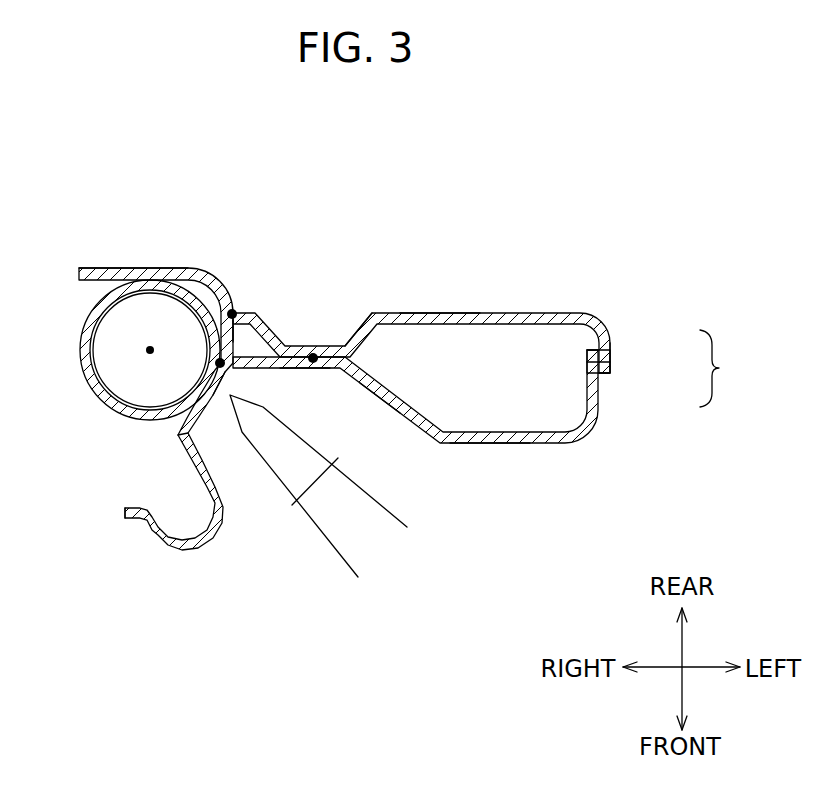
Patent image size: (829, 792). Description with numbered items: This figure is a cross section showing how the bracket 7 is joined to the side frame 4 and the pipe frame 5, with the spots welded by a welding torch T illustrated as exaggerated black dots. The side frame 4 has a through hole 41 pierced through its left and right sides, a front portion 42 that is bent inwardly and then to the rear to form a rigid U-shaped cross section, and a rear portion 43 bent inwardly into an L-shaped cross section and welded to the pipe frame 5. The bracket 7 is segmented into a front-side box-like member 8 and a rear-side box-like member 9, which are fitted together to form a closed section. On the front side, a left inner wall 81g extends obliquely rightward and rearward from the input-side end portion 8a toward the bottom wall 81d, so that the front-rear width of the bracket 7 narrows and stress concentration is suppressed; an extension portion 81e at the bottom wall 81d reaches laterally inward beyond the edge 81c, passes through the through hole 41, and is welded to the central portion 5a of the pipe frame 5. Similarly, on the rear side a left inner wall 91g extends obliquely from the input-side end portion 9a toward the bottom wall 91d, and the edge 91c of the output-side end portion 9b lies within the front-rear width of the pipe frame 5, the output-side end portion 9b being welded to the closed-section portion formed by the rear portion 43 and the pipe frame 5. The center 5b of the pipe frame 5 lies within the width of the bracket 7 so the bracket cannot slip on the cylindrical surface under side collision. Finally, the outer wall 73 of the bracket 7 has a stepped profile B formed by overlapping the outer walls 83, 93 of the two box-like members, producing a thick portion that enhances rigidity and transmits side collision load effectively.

The side frame 4 is at (207, 552).
The through hole 41 is at (178, 433).
The front portion 42 is at (167, 540).
The rear portion 43 is at (123, 268).
The pipe frame 5 is at (88, 317).
The central portion 5a is at (245, 328).
The center 5b is at (147, 351).
The bracket 7 is at (572, 293).
The outer wall 73 is at (672, 368).
The front-side box-like member 8 is at (513, 447).
The input-side end portion 8a is at (480, 445).
The edge 81c is at (216, 366).
The bottom wall 81d is at (303, 368).
The extension portion 81e is at (222, 393).
The left inner wall 81g is at (378, 393).
The outer wall 83 is at (598, 358).
The rear-side box-like member 9 is at (513, 311).
The input-side end portion 9a is at (440, 313).
The output-side end portion 9b is at (233, 311).
The edge 91c is at (229, 312).
The bottom wall 91d is at (313, 354).
The left inner wall 91g is at (346, 340).
The outer wall 93 is at (603, 352).
The stepped profile B is at (605, 374).
The welding torch T is at (345, 567).